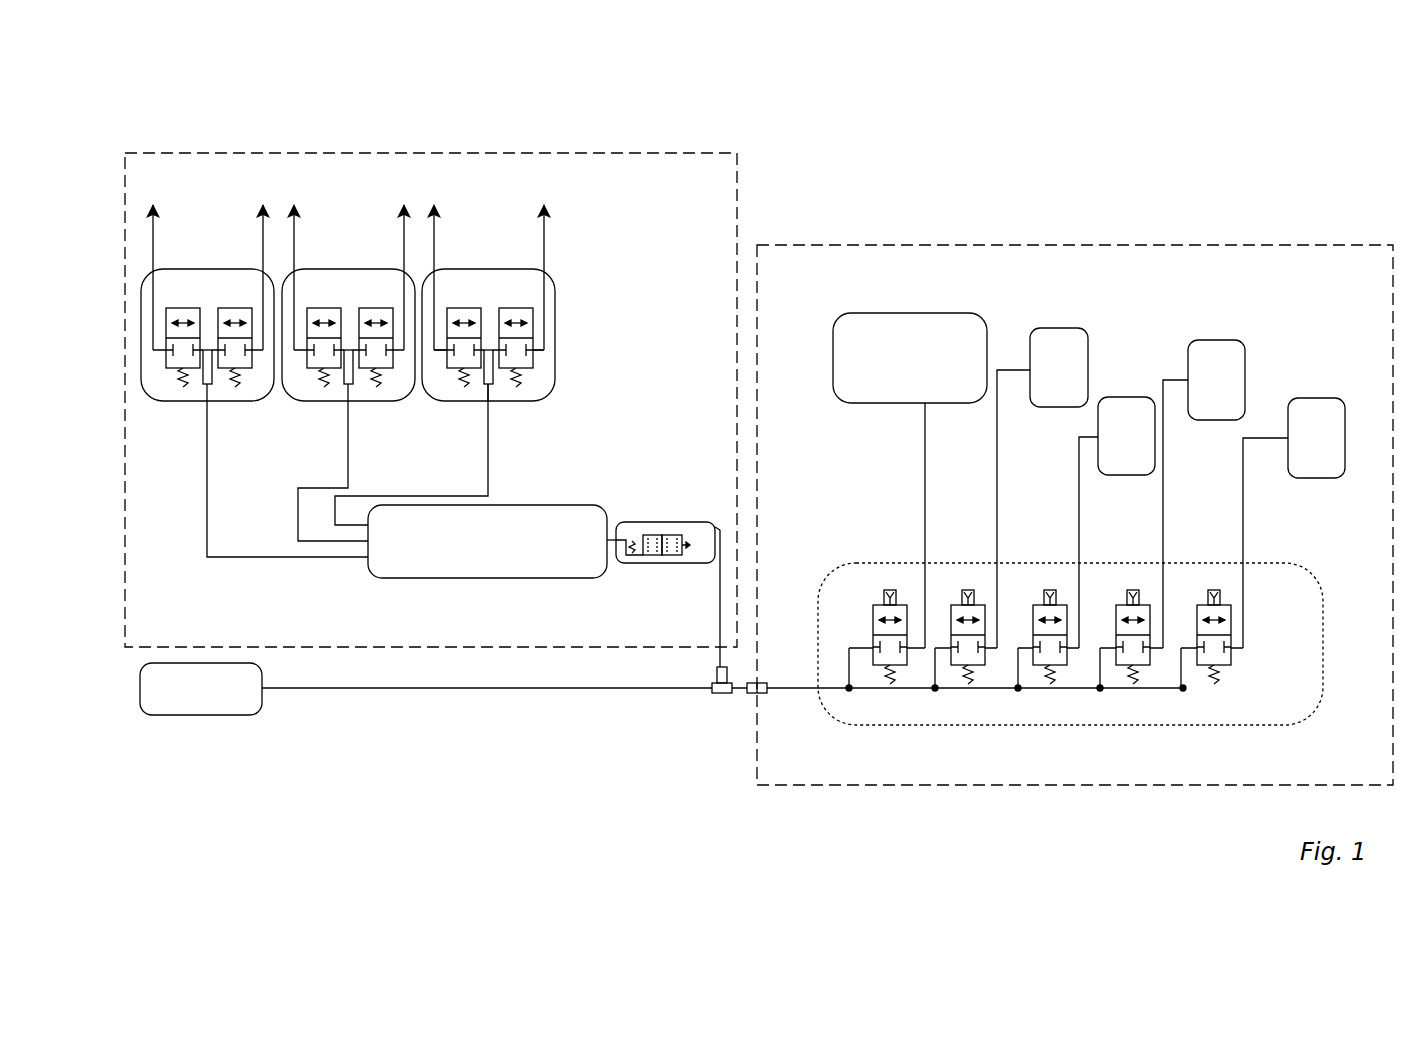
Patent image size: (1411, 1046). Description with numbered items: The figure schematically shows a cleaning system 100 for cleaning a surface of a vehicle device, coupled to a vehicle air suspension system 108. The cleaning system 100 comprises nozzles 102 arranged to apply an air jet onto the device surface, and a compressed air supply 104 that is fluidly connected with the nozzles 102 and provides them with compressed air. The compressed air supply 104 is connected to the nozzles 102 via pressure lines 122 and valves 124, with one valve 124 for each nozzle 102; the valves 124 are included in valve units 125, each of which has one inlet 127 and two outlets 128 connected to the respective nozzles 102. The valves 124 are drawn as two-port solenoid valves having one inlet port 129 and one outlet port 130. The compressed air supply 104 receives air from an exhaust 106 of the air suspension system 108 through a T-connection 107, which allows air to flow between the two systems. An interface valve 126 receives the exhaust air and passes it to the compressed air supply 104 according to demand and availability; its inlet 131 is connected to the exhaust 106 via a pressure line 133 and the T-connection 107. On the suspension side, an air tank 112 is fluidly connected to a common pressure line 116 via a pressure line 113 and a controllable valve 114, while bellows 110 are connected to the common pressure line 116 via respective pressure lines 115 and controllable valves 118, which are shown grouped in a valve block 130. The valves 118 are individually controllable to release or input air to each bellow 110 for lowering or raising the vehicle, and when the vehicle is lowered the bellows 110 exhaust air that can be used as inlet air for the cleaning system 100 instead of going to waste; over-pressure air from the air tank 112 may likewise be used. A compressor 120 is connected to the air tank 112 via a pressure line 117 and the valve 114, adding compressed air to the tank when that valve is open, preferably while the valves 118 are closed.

The cleaning system 100 is at (433, 112).
The nozzle 102 is at (262, 228).
The compressed air supply 104 is at (512, 557).
The exhaust 106 is at (752, 699).
The T-connection 107 is at (710, 699).
The air suspension system 108 is at (1086, 245).
The bellows 110 is at (1187, 355).
The air tank 112 is at (930, 368).
The pressure line 113 is at (923, 462).
The controllable valve 114 is at (864, 612).
The pressure lines 115 is at (1078, 470).
The common pressure line 116 is at (987, 692).
The pressure line 117 is at (497, 690).
The controllable valves 118 is at (1195, 598).
The compressor 120 is at (222, 701).
The pressure lines 122 is at (208, 478).
The valves 124 is at (223, 307).
The valve units 125 is at (230, 401).
The interface valve 126 is at (664, 522).
The inlet 127 is at (486, 404).
The outlets 128 is at (432, 270).
The inlet port 129 is at (480, 352).
The outlet port 130 is at (446, 352).
The inlet 131 is at (718, 527).
The pressure line 133 is at (719, 592).